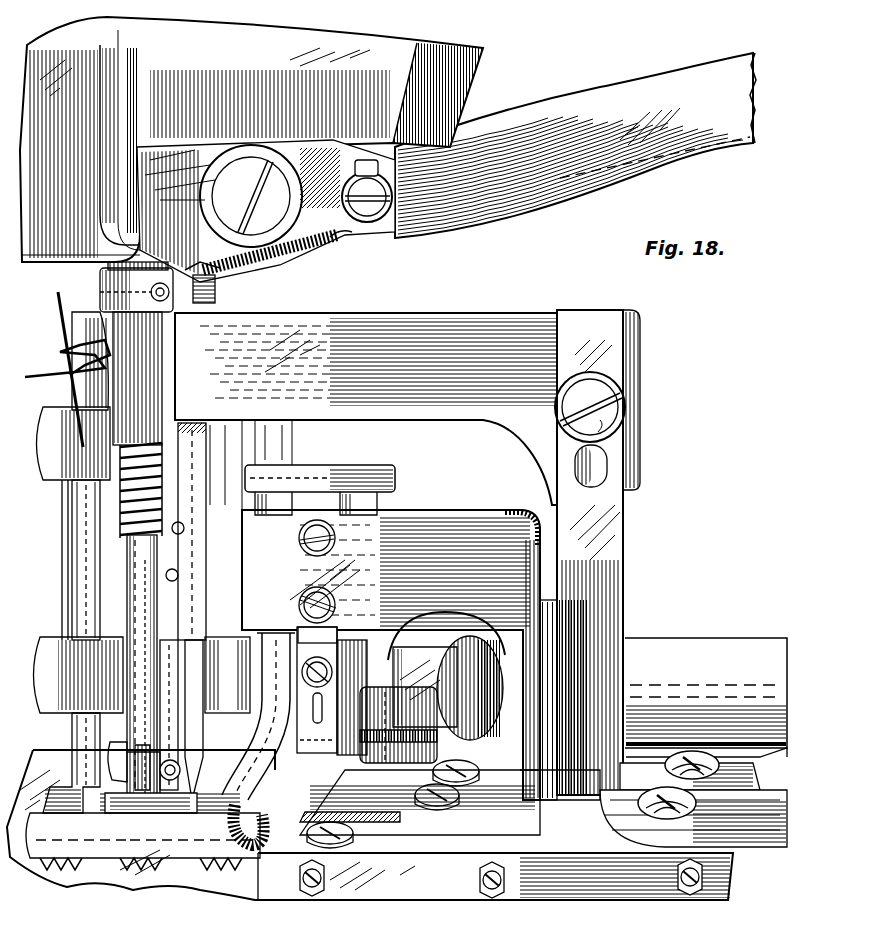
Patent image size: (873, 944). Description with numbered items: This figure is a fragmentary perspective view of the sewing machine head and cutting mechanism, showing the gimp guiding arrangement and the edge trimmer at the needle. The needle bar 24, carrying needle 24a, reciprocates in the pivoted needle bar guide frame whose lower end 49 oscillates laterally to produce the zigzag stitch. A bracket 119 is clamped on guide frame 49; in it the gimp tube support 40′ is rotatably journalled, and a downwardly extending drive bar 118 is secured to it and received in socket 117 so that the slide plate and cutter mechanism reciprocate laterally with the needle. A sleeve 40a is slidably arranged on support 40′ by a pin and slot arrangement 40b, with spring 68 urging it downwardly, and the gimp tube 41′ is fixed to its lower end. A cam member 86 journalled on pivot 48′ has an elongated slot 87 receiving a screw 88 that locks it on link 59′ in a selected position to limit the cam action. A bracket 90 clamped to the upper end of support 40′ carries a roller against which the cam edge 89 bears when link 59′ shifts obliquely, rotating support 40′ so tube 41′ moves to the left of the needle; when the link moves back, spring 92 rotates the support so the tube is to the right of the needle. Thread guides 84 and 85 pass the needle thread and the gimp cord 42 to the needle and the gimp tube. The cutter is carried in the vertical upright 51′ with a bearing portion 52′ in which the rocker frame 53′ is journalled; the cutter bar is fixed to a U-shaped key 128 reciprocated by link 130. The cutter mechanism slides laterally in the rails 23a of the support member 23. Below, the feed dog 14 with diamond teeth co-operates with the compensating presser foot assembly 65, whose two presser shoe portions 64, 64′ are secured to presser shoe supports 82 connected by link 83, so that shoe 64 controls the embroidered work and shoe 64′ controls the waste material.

The feed dog 14 is at (52, 868).
The cutting mechanism support member 23 is at (420, 893).
The rails 23a is at (357, 810).
The needle bar 24 is at (195, 512).
The needle 24a is at (185, 728).
The gimp tube support 40′ is at (128, 508).
The sleeve 40a is at (133, 590).
The pin and slot arrangement 40b is at (170, 622).
The gimp tube 41′ is at (78, 732).
The gimp cord 42 is at (60, 306).
The pivot 48′ is at (292, 242).
The lower end of needle bar guide frame 49 is at (215, 293).
The upright 51′ is at (512, 553).
The bearing portion 52′ is at (689, 650).
The rocker frame 53′ is at (425, 660).
The link 59′ is at (565, 122).
The presser shoe portion 64 is at (100, 852).
The presser shoe portion 64′ is at (195, 850).
The compensating presser foot assembly 65 is at (70, 538).
The spring 68 is at (125, 480).
The presser shoe supports 82 is at (80, 718).
The link 83 is at (105, 560).
The thread guide 84 is at (66, 357).
The thread guide 85 is at (216, 383).
The cam member 86 is at (147, 210).
The elongated slot 87 is at (370, 160).
The screw 88 is at (375, 222).
The cam edge 89 is at (118, 264).
The bracket 90 is at (112, 292).
The spring 92 is at (262, 262).
The socket 117 is at (553, 797).
The drive bar 118 is at (615, 536).
The bracket 119 is at (412, 325).
The U-shaped key 128 is at (385, 468).
The link 130 is at (318, 755).